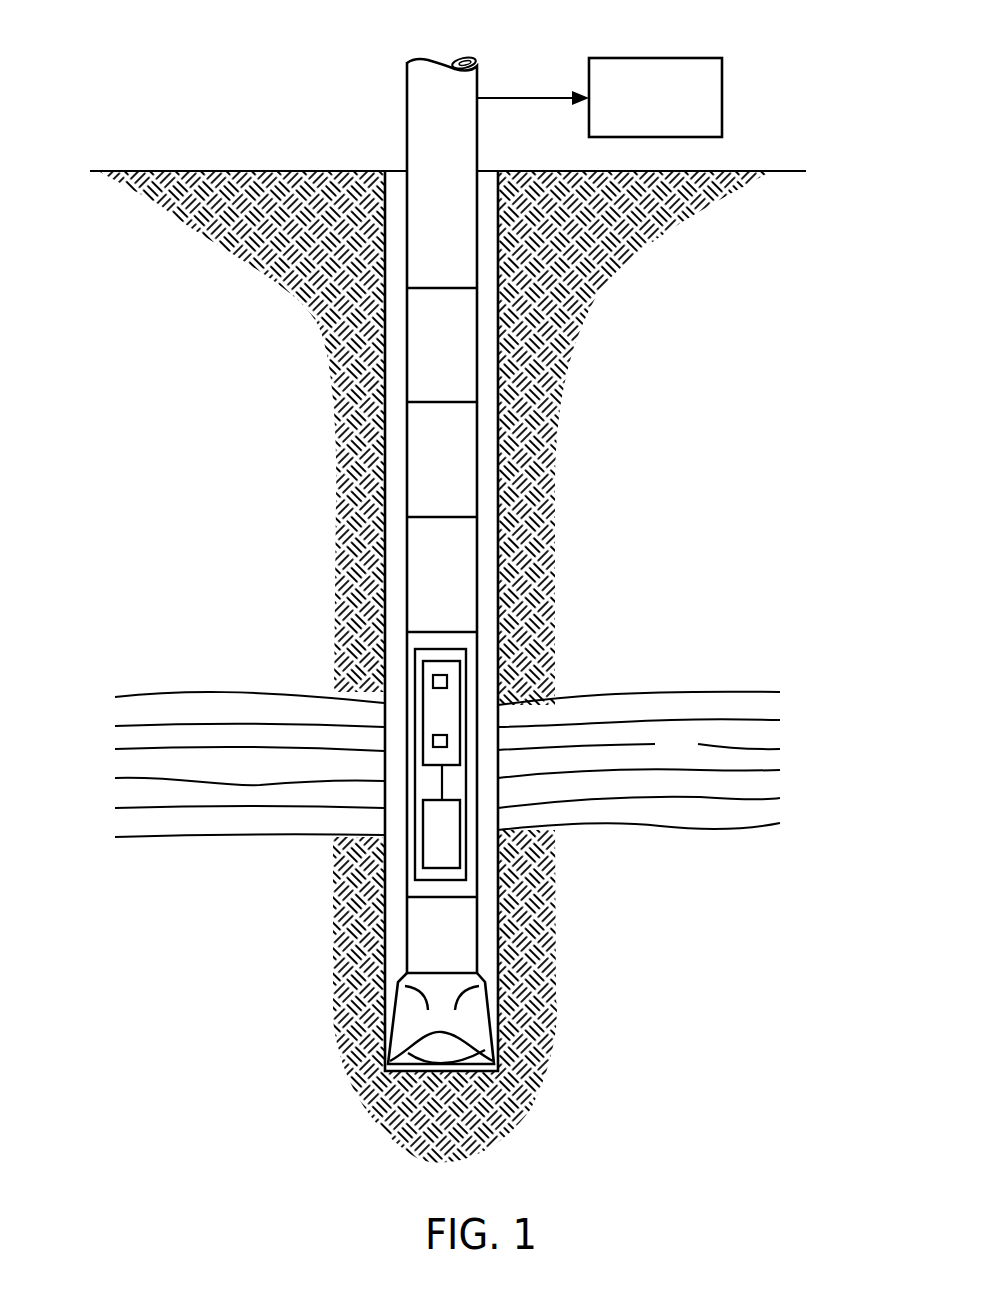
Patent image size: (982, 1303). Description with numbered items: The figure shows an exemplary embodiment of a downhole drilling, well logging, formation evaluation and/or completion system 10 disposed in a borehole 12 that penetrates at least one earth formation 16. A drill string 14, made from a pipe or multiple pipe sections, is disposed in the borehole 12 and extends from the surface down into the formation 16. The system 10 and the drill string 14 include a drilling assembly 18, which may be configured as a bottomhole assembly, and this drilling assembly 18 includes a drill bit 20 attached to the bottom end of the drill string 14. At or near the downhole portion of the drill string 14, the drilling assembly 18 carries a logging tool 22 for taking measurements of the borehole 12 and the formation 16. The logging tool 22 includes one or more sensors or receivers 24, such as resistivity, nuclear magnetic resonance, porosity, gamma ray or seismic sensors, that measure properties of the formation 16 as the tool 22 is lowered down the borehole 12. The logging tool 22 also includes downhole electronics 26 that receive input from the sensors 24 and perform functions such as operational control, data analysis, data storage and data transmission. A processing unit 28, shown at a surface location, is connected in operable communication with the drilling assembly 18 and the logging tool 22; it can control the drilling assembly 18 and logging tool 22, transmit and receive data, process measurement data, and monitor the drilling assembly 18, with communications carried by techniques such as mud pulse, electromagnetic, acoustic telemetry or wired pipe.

The downhole drilling, well logging, formation evaluation and/or completion system 10 is at (328, 136).
The borehole 12 is at (487, 507).
The drill string 14 is at (477, 457).
The earth formation 16 is at (694, 761).
The drilling assembly 18 is at (522, 876).
The drill bit 20 is at (472, 1018).
The logging tool 22 is at (415, 670).
The sensors or receivers 24 is at (447, 740).
The downhole electronics 26 is at (460, 835).
The processing unit 28 is at (722, 97).